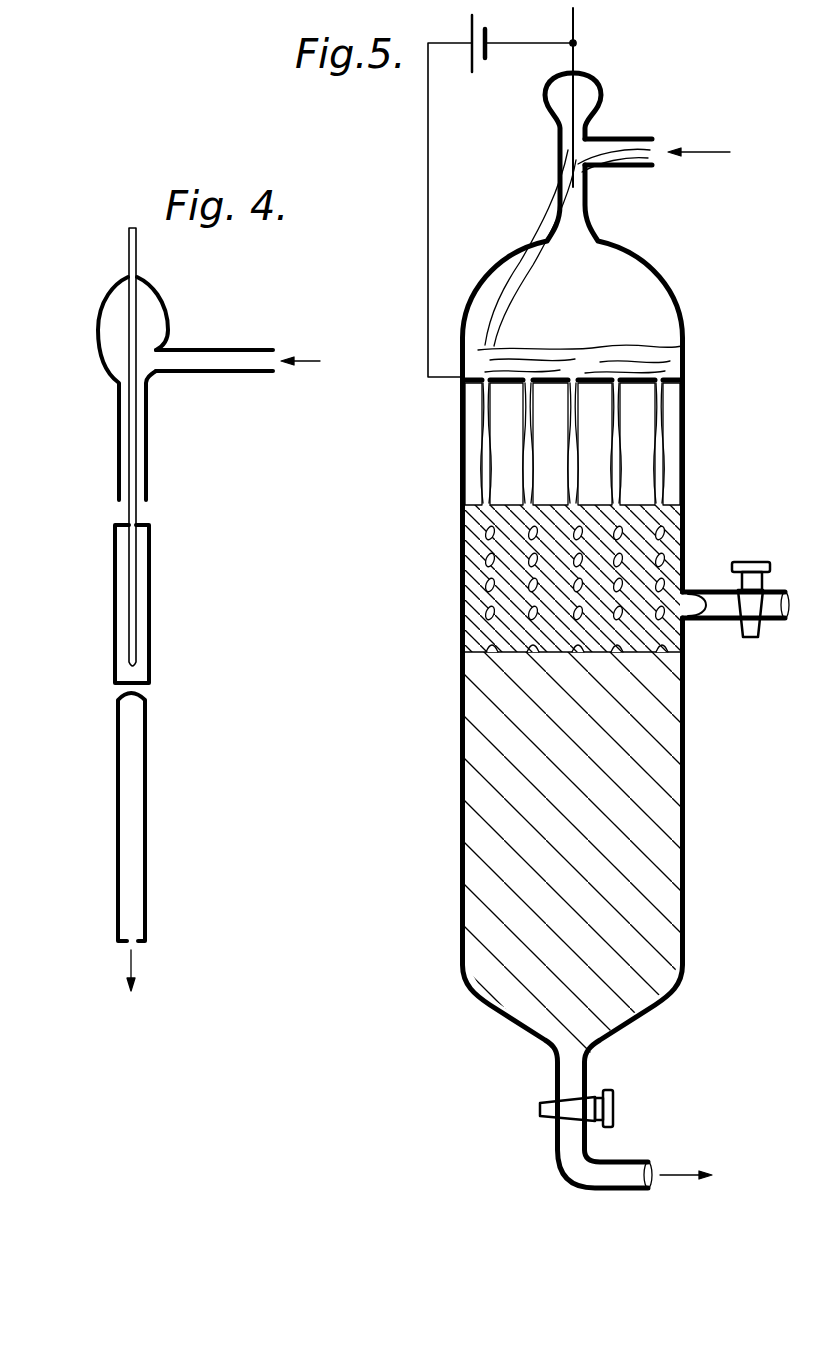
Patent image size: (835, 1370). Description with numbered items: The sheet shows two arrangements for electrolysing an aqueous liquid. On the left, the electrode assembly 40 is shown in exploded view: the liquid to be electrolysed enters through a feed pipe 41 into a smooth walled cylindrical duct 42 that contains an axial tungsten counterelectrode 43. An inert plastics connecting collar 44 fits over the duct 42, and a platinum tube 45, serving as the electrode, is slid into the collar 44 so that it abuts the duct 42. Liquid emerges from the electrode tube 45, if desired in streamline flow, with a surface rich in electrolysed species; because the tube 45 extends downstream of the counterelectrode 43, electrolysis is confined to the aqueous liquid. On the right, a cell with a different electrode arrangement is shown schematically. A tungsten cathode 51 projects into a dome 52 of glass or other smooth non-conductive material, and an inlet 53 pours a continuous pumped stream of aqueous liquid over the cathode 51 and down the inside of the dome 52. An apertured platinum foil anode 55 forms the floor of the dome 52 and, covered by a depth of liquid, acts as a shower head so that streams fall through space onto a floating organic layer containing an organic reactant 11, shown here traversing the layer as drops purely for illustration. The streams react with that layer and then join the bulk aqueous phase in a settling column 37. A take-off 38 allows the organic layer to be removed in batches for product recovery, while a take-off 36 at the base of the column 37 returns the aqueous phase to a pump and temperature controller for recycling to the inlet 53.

In FIG. 5, the organic reactant 11 is at (665, 548).
In FIG. 5, the take-off 36 is at (626, 1172).
In FIG. 5, the settling column 37 is at (664, 823).
In FIG. 5, the take-off 38 is at (757, 553).
In FIG. 4, the electrode assembly 40 is at (88, 574).
In FIG. 4, the feed pipe 41 is at (238, 349).
In FIG. 4, the smooth walled cylindrical duct 42 is at (149, 470).
In FIG. 4, the axial tungsten counterelectrode 43 is at (134, 425).
In FIG. 4, the inert plastics connecting collar 44 is at (151, 612).
In FIG. 4, the platinum tube 45 is at (147, 822).
In FIG. 5, the tungsten cathode 51 is at (577, 61).
In FIG. 5, the dome 52 is at (622, 243).
In FIG. 5, the inlet 53 is at (632, 141).
In FIG. 5, the apertured platinum foil anode 55 is at (634, 379).